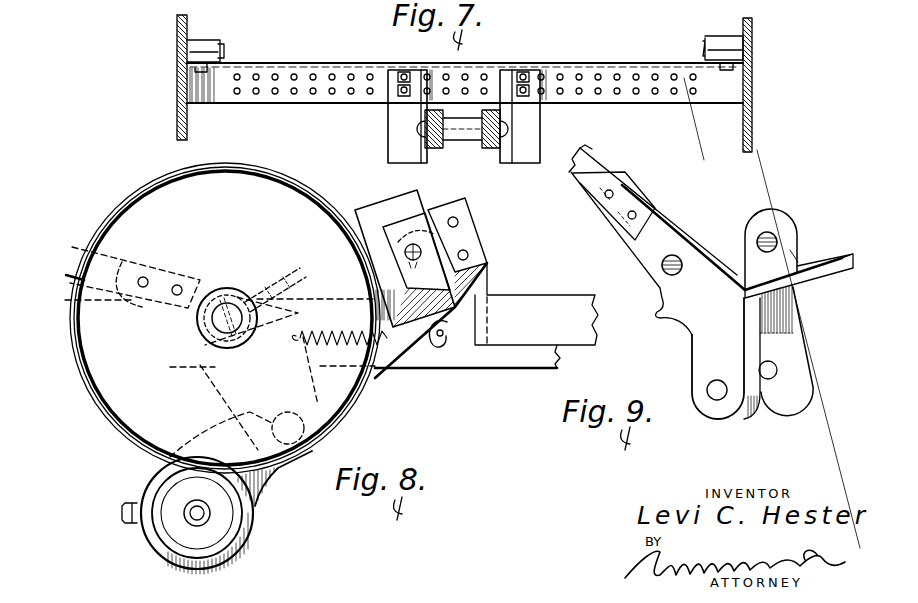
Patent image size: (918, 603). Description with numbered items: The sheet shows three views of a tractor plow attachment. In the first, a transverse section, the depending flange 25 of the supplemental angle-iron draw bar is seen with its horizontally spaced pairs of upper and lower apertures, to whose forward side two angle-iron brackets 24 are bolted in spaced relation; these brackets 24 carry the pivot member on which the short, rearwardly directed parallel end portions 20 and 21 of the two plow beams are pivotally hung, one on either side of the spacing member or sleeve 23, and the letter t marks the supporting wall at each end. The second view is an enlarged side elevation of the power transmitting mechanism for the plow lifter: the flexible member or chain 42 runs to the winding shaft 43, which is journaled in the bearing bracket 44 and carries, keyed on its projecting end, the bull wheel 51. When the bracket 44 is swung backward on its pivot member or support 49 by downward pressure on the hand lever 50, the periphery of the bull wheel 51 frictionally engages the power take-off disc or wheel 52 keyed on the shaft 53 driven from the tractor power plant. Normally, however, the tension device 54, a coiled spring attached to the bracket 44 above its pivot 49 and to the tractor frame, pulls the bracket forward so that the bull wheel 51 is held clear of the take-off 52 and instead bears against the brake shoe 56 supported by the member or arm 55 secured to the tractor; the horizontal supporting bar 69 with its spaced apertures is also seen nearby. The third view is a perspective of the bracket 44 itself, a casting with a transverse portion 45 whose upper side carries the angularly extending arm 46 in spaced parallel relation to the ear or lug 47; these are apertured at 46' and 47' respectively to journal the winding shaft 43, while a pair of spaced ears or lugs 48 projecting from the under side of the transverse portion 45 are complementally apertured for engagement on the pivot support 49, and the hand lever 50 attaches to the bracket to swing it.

In FIG. 7, the wall / side rail support t is at (194, 73).
In FIG. 7, the depending flange 25 is at (272, 90).
In FIG. 7, the bracket 24 is at (396, 122).
In FIG. 7, the parallel end portion 20 is at (434, 148).
In FIG. 7, the parallel end portion 21 is at (490, 148).
In FIG. 7, the spacing member or sleeve 23 is at (477, 132).
In FIG. 8, the bull wheel 51 is at (324, 199).
In FIG. 8, the winding shaft 43 is at (221, 330).
In FIG. 8, the flexible member or chain 42 is at (295, 271).
In FIG. 8, the hand lever 50 is at (90, 249).
In FIG. 9, the hand lever 50 is at (598, 190).
In FIG. 8, the angularly extending arm 46 is at (136, 297).
In FIG. 9, the angularly extending arm 46 is at (612, 219).
In FIG. 9, the aperture 46' is at (647, 272).
In FIG. 8, the bearing bracket 44 is at (255, 392).
In FIG. 9, the bearing bracket 44 is at (703, 346).
In FIG. 8, the pivot member or support 49 is at (304, 430).
In FIG. 8, the brake shoe 56 is at (384, 209).
In FIG. 8, the member or arm 55 is at (376, 381).
In FIG. 8, the tension device 54 is at (396, 360).
In FIG. 8, the supporting bar 69 is at (523, 304).
In FIG. 8, the power take-off disc or wheel 52 is at (226, 531).
In FIG. 8, the shaft 53 is at (199, 513).
In FIG. 9, the transverse portion 45 is at (762, 280).
In FIG. 9, the ear or lug 47 is at (786, 214).
In FIG. 9, the aperture 47' is at (811, 226).
In FIG. 9, the spaced ears or lugs 48 is at (757, 355).